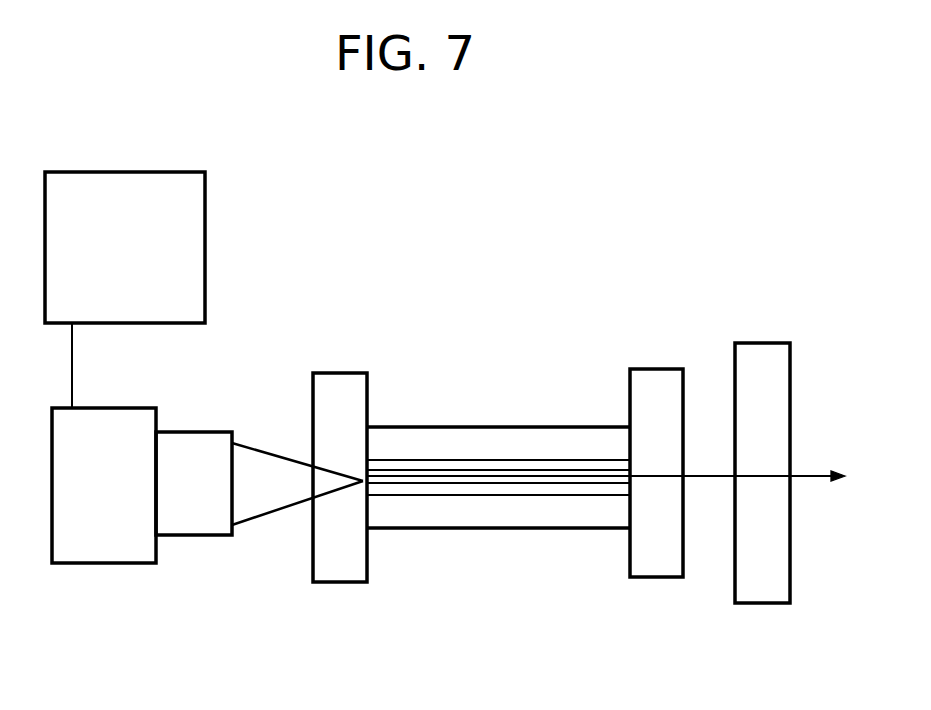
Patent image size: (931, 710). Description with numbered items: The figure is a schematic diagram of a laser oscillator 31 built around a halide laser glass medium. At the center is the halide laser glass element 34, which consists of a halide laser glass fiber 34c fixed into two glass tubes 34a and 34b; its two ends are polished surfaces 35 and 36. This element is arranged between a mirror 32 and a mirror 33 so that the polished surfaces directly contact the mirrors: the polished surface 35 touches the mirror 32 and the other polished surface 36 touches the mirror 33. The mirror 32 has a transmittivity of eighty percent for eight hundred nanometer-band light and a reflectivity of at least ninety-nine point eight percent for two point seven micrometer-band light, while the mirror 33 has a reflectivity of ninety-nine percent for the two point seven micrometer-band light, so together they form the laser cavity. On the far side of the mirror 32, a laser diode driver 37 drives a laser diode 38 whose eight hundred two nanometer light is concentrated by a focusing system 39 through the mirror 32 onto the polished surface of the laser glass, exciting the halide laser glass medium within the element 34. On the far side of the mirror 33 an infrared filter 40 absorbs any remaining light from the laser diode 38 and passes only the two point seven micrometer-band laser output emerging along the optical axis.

The laser oscillator 31 is at (518, 280).
The mirror 32 is at (340, 373).
The mirror 33 is at (650, 369).
The halide laser glass element 34 is at (485, 426).
The glass tube 34a is at (430, 490).
The glass tube 34b is at (500, 518).
The halide laser glass fiber 34c is at (568, 480).
The polished surface 35 is at (363, 483).
The polished surface 36 is at (632, 478).
The laser diode driver 37 is at (205, 192).
The laser diode 38 is at (106, 548).
The focusing system 39 is at (200, 525).
The infrared filter 40 is at (773, 570).